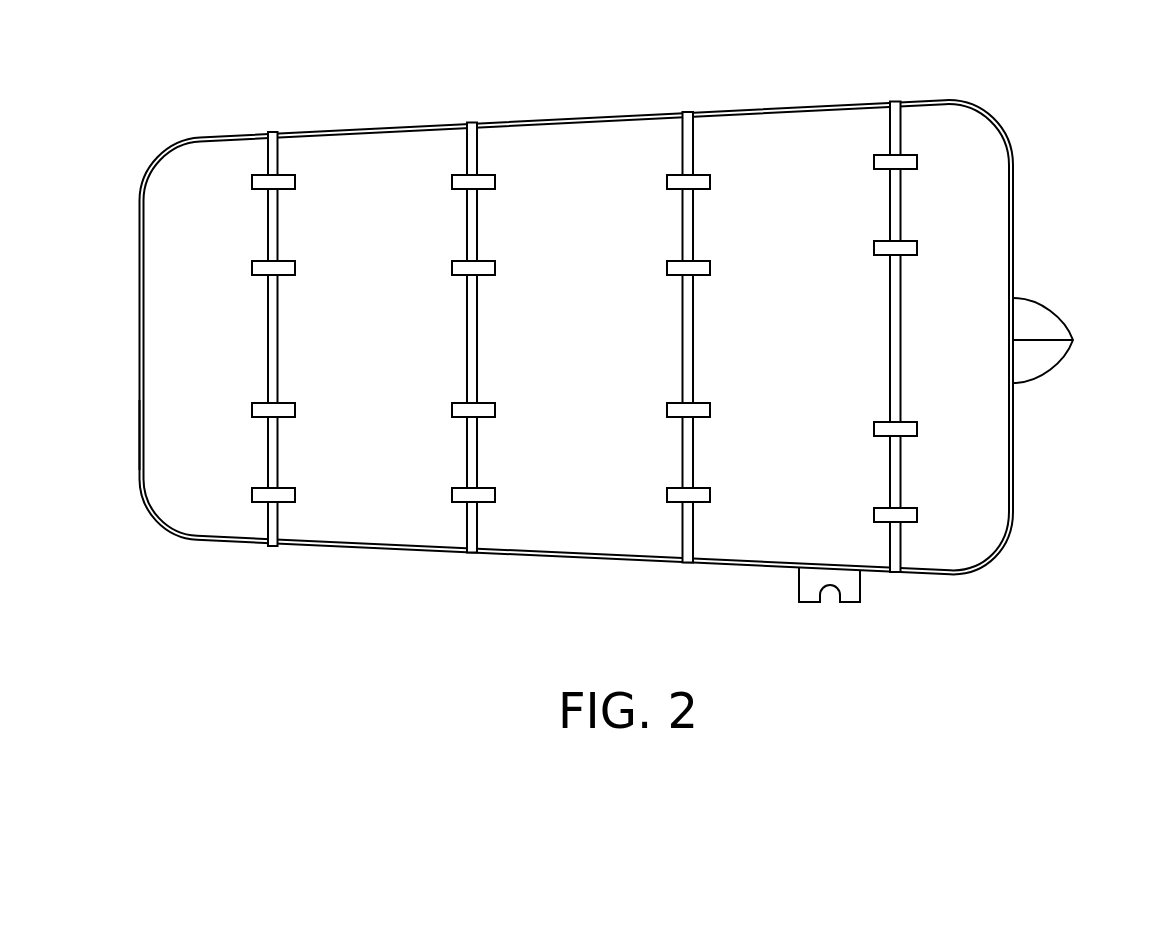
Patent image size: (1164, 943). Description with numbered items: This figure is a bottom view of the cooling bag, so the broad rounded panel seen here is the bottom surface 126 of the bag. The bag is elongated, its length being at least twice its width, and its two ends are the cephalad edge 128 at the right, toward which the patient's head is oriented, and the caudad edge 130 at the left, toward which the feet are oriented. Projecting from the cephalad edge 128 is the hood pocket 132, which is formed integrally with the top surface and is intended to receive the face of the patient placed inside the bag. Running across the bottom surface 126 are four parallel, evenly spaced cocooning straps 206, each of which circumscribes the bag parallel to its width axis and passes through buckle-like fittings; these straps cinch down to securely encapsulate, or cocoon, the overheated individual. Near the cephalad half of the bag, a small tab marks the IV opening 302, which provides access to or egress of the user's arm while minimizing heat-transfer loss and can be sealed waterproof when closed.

The bottom surface 126 is at (602, 142).
The cephalad edge 128 is at (1013, 461).
The caudad edge 130 is at (139, 435).
The hood pocket 132 is at (1038, 303).
The cocooning straps 206 is at (477, 513).
The IV opening 302 is at (850, 601).